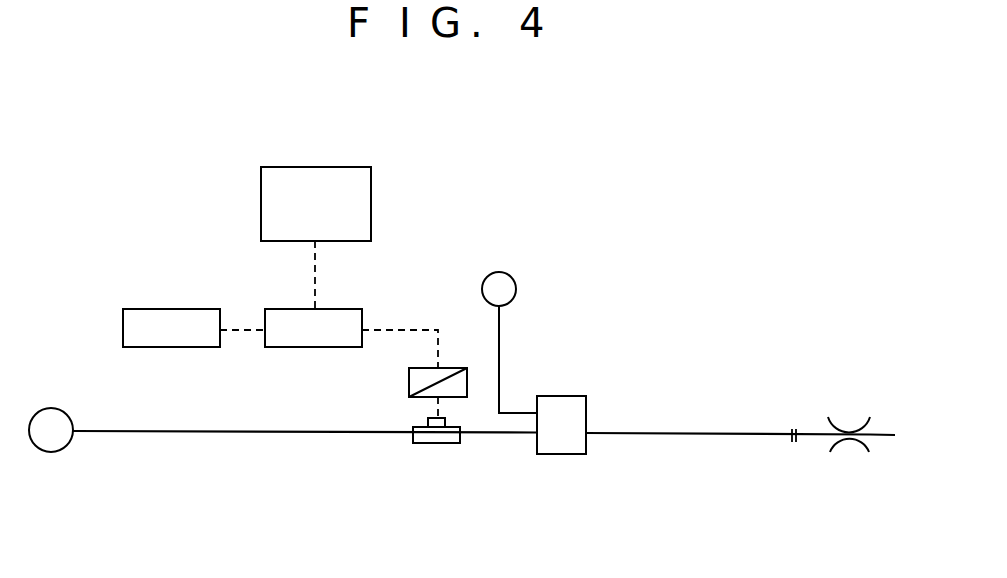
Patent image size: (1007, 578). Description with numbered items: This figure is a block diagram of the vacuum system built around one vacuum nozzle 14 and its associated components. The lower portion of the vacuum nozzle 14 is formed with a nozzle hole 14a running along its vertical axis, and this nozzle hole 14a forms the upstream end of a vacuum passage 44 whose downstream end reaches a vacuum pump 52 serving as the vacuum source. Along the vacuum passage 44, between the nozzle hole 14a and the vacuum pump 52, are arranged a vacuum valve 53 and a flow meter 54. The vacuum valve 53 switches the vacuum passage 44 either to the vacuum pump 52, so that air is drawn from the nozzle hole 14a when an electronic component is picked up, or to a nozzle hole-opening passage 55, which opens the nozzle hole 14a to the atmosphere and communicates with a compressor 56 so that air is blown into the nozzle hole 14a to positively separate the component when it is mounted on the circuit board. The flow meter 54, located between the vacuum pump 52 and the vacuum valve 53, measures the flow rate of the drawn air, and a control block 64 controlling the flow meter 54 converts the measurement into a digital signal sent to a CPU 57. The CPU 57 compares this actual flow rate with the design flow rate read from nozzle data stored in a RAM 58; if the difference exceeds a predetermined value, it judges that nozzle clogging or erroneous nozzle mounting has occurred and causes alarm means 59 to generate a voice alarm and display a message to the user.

The vacuum nozzle 14 is at (852, 447).
The nozzle hole 14a is at (875, 445).
The vacuum passage 44 is at (283, 433).
The vacuum pump 52 is at (70, 413).
The vacuum valve 53 is at (588, 407).
The flow meter 54 is at (434, 444).
The nozzle hole-opening passage 55 is at (500, 378).
The compressor 56 is at (515, 283).
The CPU 57 is at (363, 315).
The RAM 58 is at (170, 307).
The alarm means 59 is at (372, 193).
The control block 64 is at (407, 390).